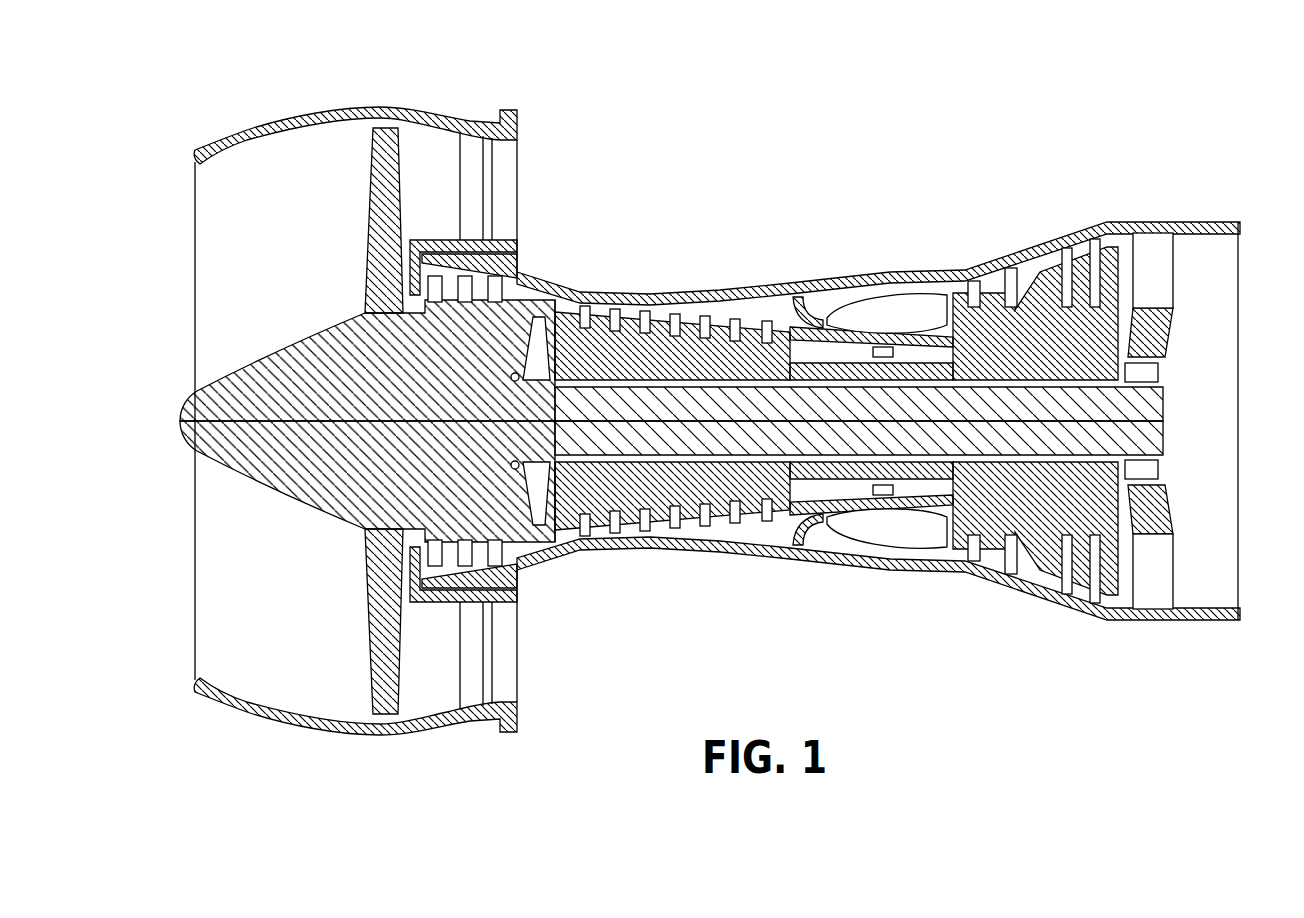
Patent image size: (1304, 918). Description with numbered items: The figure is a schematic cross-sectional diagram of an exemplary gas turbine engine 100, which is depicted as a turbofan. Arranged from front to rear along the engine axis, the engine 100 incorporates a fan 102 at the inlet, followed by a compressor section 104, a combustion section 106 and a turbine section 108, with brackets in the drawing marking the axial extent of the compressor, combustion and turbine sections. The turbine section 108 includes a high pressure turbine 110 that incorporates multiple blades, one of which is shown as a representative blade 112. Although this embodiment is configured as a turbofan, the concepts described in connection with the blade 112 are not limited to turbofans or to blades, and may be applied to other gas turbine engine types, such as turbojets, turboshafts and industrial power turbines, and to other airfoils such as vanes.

The engine 100 is at (138, 103).
The fan 102 is at (371, 209).
The compressor section 104 is at (793, 283).
The combustion section 106 is at (950, 270).
The turbine section 108 is at (1240, 222).
The high pressure turbine 110 is at (998, 335).
The blade 112 is at (950, 288).